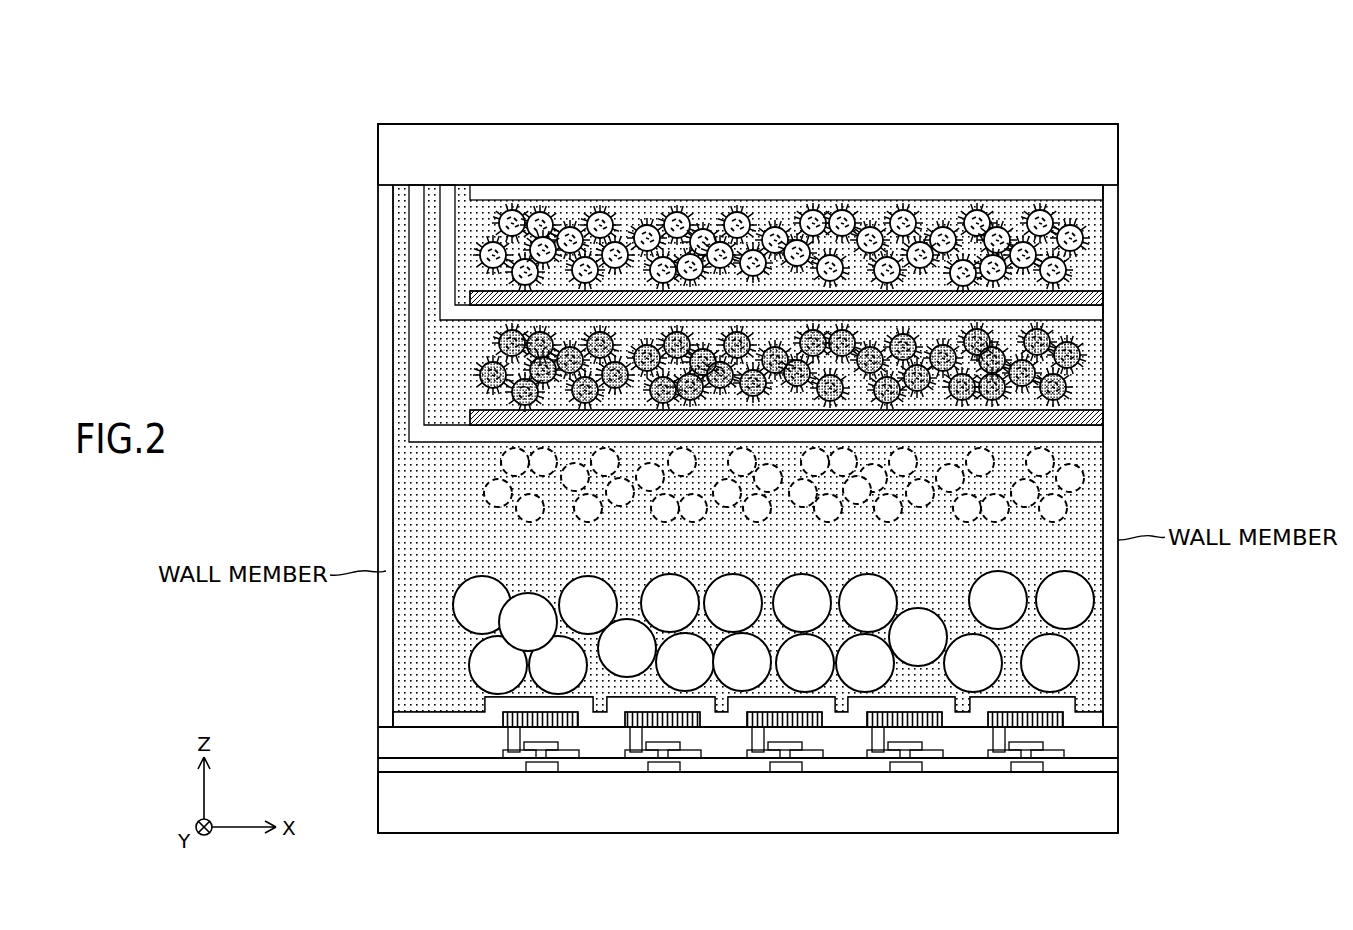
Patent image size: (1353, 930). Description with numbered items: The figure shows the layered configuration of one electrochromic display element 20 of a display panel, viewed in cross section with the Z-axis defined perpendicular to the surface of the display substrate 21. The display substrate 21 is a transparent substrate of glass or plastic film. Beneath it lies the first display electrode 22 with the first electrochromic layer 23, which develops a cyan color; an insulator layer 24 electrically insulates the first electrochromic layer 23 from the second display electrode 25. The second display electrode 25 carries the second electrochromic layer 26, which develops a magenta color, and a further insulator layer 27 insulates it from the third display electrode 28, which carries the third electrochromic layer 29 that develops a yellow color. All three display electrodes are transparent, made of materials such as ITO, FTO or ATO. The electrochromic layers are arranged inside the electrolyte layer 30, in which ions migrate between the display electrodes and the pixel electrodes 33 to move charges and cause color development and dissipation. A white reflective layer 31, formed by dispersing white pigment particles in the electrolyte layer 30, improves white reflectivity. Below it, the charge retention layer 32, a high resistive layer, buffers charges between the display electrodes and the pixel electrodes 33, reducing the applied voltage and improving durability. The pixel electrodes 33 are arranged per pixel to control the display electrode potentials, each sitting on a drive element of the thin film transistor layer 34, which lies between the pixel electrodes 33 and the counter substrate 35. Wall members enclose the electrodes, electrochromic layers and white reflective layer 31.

The electrochromic display element 20 is at (794, 95).
The display substrate 21 is at (1118, 158).
The first display electrode 22 is at (1103, 194).
The first electrochromic layer 23 is at (1085, 240).
The insulator layer 24 is at (1100, 298).
The second display electrode 25 is at (1100, 312).
The second electrochromic layer 26 is at (1082, 360).
The insulator layer 27 is at (1100, 418).
The third display electrode 28 is at (1100, 433).
The third electrochromic layer 29 is at (1085, 490).
The electrolyte layer 30 is at (400, 467).
The white reflective layer 31 is at (1090, 600).
The charge retention layer 32 is at (1072, 702).
The pixel electrodes 33 is at (1106, 720).
The thin film transistor layer 34 is at (1128, 727).
The counter substrate 35 is at (1113, 800).